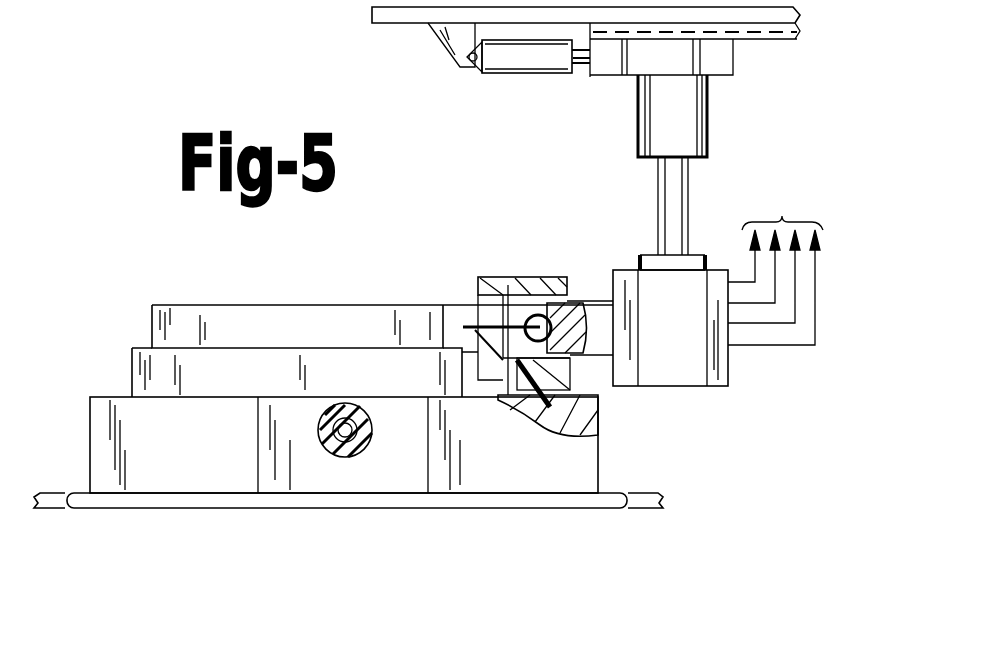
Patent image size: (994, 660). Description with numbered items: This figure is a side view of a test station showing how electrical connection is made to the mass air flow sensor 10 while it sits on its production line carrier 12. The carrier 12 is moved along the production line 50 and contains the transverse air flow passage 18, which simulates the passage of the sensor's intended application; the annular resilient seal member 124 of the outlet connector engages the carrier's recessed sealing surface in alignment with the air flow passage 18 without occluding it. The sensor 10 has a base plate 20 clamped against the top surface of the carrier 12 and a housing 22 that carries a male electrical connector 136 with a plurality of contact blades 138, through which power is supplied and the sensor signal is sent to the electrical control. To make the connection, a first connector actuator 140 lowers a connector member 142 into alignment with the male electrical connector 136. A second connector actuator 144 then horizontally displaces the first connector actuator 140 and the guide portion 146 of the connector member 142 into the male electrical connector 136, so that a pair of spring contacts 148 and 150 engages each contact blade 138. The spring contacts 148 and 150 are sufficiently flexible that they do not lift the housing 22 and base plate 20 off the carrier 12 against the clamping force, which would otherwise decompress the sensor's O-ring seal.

The mass air flow sensor 10 is at (268, 305).
The production line carrier 12 is at (90, 437).
The air flow passage 18 is at (358, 407).
The base plate 20 is at (130, 363).
The housing 22 is at (152, 320).
The production line 50 is at (337, 510).
The annular resilient seal member 124 is at (323, 407).
The male electrical connector 136 is at (497, 277).
The contact blades 138 is at (543, 295).
The first connector actuator 140 is at (638, 103).
The connector member 142 is at (677, 387).
The second connector actuator 144 is at (507, 73).
The guide portion 146 is at (597, 355).
The spring contact 148 is at (522, 316).
The spring contact 150 is at (508, 285).